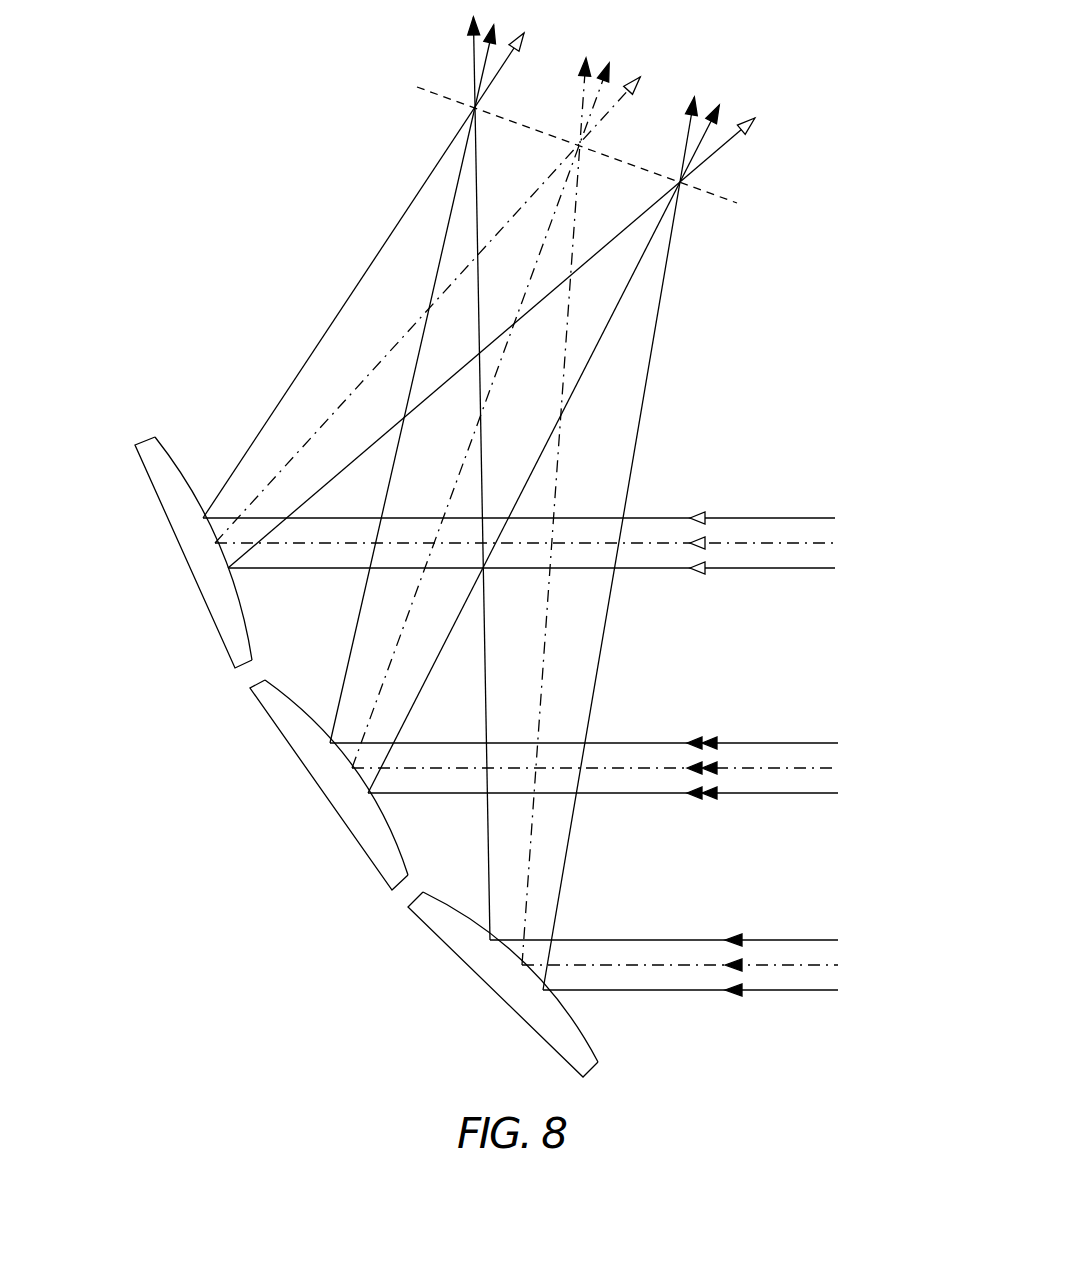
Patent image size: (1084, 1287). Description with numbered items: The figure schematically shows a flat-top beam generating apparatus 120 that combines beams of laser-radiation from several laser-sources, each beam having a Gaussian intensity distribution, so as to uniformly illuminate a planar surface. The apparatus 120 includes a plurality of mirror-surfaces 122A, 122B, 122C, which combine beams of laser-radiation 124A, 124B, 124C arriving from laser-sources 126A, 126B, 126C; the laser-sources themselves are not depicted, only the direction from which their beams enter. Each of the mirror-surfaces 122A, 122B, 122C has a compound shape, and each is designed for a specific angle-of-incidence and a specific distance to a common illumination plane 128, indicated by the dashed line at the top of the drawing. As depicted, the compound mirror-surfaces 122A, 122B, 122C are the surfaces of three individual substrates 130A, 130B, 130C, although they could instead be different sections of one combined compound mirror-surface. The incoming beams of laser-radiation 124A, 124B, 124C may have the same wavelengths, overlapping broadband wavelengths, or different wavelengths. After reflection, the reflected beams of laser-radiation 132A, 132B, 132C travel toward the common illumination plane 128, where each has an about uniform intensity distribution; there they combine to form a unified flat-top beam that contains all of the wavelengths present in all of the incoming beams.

The flat-top beam generating apparatus 120 is at (268, 898).
The mirror-surface 122A is at (186, 468).
The mirror-surface 122B is at (304, 698).
The mirror-surface 122C is at (463, 905).
The beam of laser-radiation 124A is at (740, 515).
The beam of laser-radiation 124B is at (753, 740).
The beam of laser-radiation 124C is at (773, 938).
The laser-source 126A is at (871, 542).
The laser-source 126B is at (873, 769).
The laser-source 126C is at (871, 969).
The common illumination plane 128 is at (738, 202).
The substrate 130A is at (192, 545).
The substrate 130B is at (340, 795).
The substrate 130C is at (512, 997).
The reflected beam of laser-radiation 132A is at (338, 332).
The reflected beam of laser-radiation 132B is at (422, 650).
The reflected beam of laser-radiation 132C is at (592, 633).